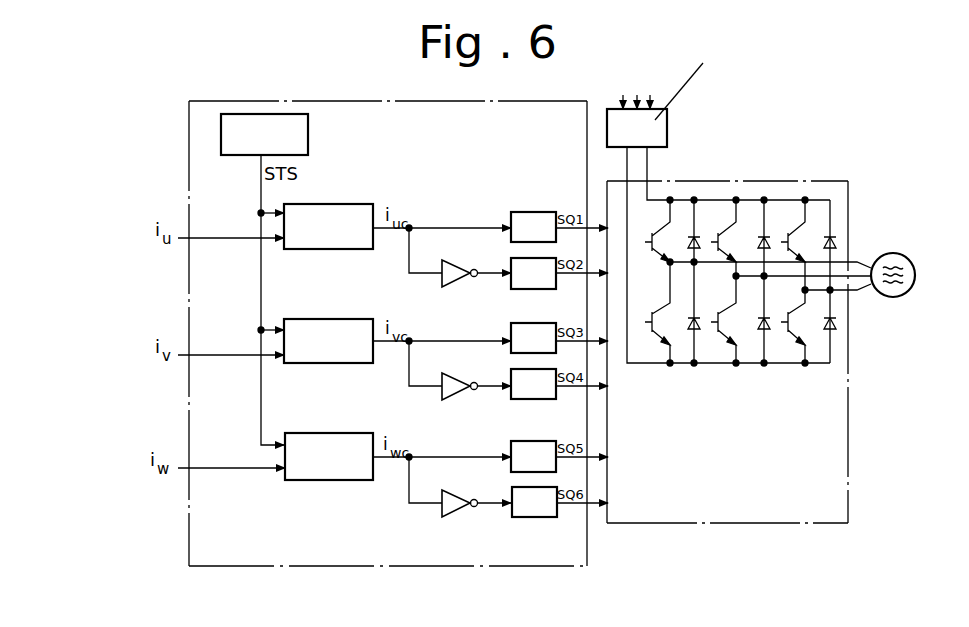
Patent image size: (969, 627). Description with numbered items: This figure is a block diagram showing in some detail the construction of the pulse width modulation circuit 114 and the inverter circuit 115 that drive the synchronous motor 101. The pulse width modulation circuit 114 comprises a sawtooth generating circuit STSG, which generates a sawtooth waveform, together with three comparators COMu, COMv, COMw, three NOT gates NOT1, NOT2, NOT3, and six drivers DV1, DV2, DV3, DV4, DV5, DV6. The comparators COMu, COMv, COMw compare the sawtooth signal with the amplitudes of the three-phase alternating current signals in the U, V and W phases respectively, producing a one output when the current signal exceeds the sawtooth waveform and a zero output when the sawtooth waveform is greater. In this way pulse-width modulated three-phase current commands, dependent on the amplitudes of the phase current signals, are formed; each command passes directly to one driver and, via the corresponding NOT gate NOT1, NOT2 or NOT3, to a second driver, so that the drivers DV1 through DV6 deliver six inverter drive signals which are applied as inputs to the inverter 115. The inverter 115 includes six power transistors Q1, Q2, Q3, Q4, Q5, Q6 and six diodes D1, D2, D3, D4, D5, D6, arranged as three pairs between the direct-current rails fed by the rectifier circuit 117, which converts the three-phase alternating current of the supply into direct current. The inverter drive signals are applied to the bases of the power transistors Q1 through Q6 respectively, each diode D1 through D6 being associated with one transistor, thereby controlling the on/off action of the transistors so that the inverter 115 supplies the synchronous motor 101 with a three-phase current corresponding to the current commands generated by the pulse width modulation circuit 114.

The synchronous motor 101 is at (893, 253).
The pulse width modulation circuit 114 is at (380, 566).
The inverter circuit 115 is at (775, 181).
The rectifier circuit 117 is at (667, 127).
The sawtooth generating circuit STSG is at (308, 137).
The comparator COMu is at (330, 238).
The comparator COMv is at (330, 352).
The comparator COMw is at (325, 470).
The NOT gate NOT1 is at (466, 257).
The NOT gate NOT2 is at (466, 370).
The NOT gate NOT3 is at (466, 487).
The driver DV1 is at (533, 227).
The driver DV2 is at (533, 273).
The driver DV3 is at (533, 338).
The driver DV4 is at (533, 384).
The driver DV5 is at (533, 456).
The driver DV6 is at (534, 502).
The power transistor Q1 is at (653, 231).
The power transistor Q2 is at (653, 312).
The power transistor Q3 is at (723, 238).
The power transistor Q4 is at (720, 319).
The power transistor Q5 is at (791, 245).
The power transistor Q6 is at (789, 324).
The diode D1 is at (687, 231).
The diode D2 is at (704, 312).
The diode D3 is at (756, 238).
The diode D4 is at (774, 319).
The diode D5 is at (823, 230).
The diode D6 is at (841, 338).